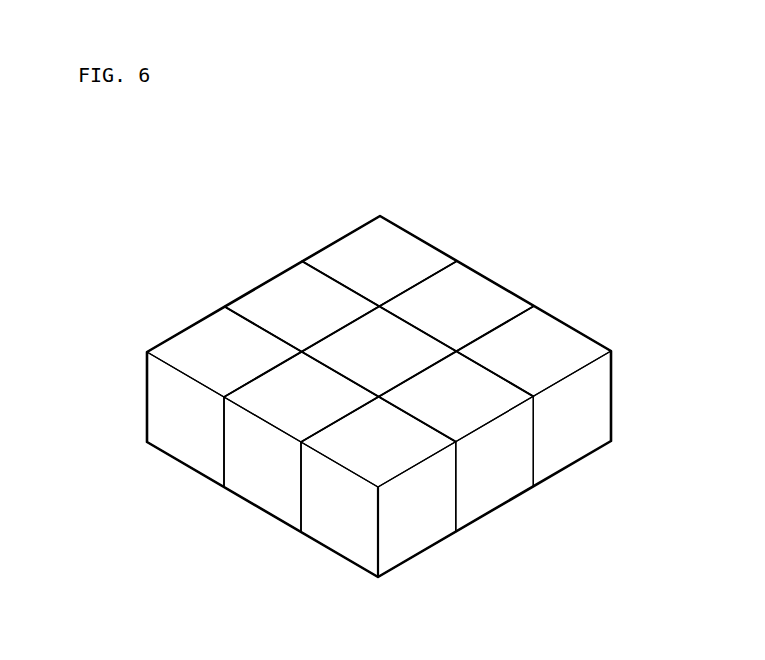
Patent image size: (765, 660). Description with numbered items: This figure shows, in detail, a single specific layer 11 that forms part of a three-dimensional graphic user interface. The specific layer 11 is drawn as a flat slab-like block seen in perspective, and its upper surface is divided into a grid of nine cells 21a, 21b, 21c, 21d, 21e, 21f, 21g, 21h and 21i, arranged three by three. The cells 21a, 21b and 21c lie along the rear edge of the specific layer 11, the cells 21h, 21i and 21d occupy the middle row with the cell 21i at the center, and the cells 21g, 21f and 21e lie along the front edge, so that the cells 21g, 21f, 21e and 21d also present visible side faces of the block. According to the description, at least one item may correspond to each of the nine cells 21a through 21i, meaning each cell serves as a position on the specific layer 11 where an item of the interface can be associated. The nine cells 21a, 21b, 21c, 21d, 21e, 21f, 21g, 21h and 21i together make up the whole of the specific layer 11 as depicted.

The specific layer 11 is at (232, 185).
The cell 21a is at (407, 248).
The cell 21b is at (482, 292).
The cell 21c is at (558, 337).
The cell 21d is at (497, 487).
The cell 21e is at (413, 535).
The cell 21f is at (257, 483).
The cell 21g is at (180, 442).
The cell 21h is at (268, 293).
The cell 21i is at (355, 342).